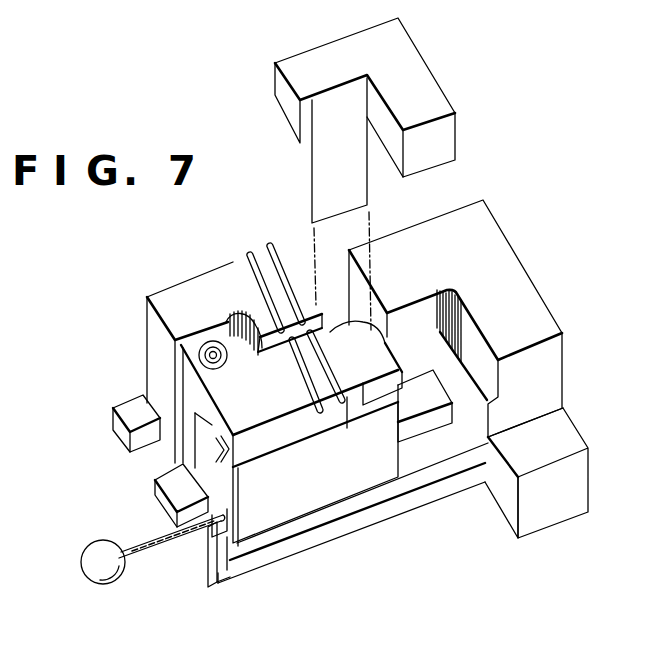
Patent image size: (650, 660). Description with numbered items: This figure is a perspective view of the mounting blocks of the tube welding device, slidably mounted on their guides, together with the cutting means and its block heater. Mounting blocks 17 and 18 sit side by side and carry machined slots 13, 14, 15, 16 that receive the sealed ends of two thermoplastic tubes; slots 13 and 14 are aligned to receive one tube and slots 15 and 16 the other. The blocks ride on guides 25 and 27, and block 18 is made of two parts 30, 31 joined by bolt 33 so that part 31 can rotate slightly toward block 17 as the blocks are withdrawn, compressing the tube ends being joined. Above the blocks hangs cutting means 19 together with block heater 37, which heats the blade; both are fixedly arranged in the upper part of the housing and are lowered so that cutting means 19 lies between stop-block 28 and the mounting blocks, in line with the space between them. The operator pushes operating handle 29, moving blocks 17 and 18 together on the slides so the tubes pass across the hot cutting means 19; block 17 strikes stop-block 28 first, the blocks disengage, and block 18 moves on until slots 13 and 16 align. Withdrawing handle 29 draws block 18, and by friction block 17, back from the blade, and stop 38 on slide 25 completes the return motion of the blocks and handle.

The slot 13 is at (261, 255).
The slot 14 is at (338, 403).
The slot 15 is at (238, 264).
The slot 16 is at (318, 414).
The mounting block 17 is at (147, 350).
The mounting block 18 is at (258, 421).
The cutting means 19 is at (349, 172).
The guide 25 is at (311, 542).
The guide 27 is at (124, 430).
The stop-block 28 is at (520, 289).
The operating handle 29 is at (112, 586).
The part of block 18 30 is at (259, 520).
The part of block 18 31 is at (208, 427).
The bolt 33 is at (222, 360).
The block heater 37 is at (405, 58).
The stop 38 is at (207, 548).